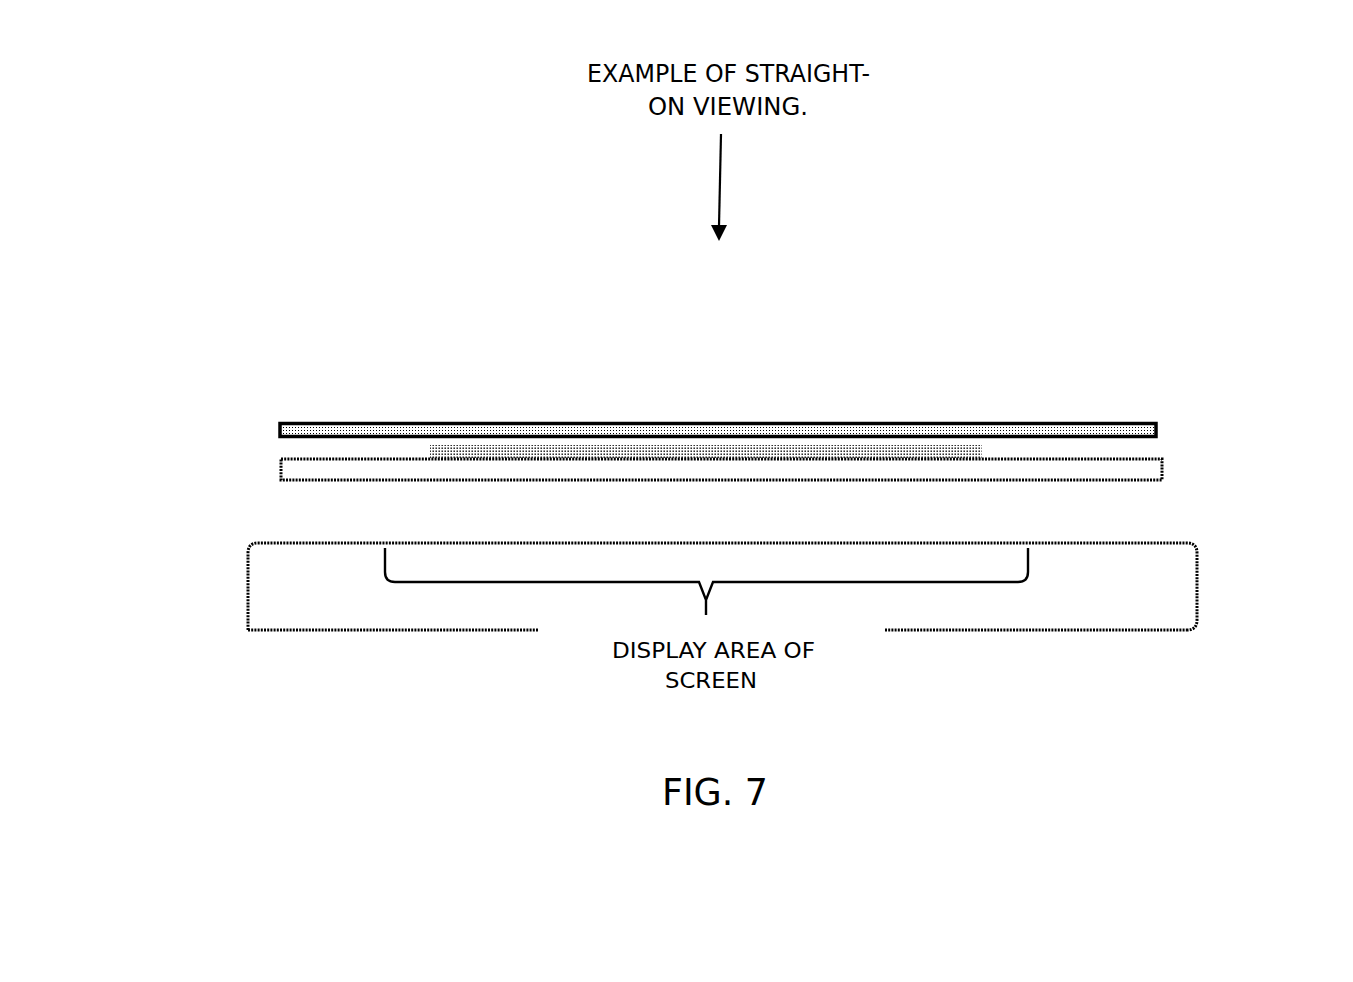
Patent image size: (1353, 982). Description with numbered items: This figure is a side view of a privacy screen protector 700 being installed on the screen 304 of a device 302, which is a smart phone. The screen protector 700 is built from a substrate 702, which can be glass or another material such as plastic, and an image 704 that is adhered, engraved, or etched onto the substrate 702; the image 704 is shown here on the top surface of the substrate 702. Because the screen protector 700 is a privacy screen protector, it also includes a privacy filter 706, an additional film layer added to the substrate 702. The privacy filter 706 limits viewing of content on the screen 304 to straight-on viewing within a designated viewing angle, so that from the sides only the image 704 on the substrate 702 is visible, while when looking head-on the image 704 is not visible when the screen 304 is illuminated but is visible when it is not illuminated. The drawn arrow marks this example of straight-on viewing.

The screen protector 700 is at (228, 396).
The substrate 702 is at (1162, 458).
The image 704 is at (728, 440).
The privacy filter 706 is at (1067, 420).
The device 302 is at (250, 626).
The screen 304 is at (1168, 540).